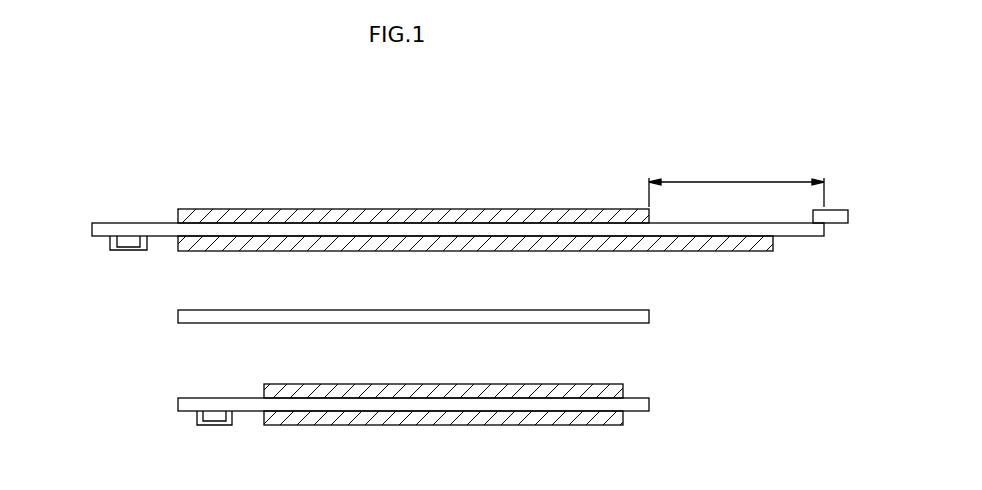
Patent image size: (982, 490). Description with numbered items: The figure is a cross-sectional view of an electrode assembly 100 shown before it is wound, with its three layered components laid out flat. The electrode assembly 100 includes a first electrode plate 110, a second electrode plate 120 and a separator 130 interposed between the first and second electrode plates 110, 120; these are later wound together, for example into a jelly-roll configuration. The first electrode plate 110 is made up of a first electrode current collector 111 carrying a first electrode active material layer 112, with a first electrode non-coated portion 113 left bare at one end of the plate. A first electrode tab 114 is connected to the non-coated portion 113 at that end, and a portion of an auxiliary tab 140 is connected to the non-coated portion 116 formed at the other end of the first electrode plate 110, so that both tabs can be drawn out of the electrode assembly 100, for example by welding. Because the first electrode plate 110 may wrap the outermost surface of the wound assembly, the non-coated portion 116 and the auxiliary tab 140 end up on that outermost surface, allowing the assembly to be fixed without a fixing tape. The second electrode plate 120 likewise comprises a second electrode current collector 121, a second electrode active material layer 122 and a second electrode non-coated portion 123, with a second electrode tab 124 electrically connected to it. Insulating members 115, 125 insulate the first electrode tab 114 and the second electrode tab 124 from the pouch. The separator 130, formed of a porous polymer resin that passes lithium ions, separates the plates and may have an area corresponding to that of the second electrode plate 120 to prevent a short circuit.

The electrode assembly 100 is at (88, 122).
The first electrode plate 110 is at (72, 229).
The first electrode current collector 111 is at (246, 224).
The first electrode active material layer 112 is at (318, 211).
The first electrode non-coated portion 113 is at (127, 222).
The first electrode tab 114 is at (120, 243).
The insulating member 115 is at (138, 251).
The non-coated portion 116 is at (736, 182).
The second electrode plate 120 is at (156, 404).
The second electrode current collector 121 is at (330, 400).
The second electrode active material layer 122 is at (403, 387).
The second electrode non-coated portion 123 is at (214, 397).
The second electrode tab 124 is at (206, 418).
The insulating member 125 is at (224, 426).
The separator 130 is at (177, 317).
The auxiliary tab 140 is at (842, 209).